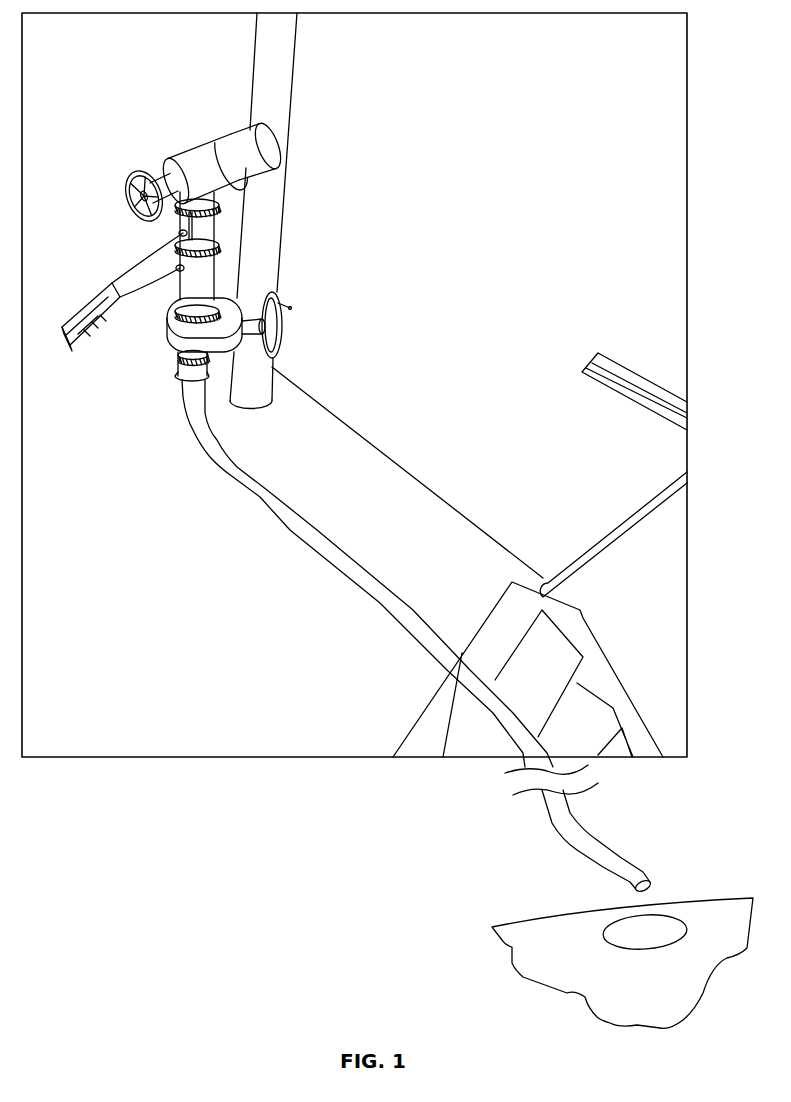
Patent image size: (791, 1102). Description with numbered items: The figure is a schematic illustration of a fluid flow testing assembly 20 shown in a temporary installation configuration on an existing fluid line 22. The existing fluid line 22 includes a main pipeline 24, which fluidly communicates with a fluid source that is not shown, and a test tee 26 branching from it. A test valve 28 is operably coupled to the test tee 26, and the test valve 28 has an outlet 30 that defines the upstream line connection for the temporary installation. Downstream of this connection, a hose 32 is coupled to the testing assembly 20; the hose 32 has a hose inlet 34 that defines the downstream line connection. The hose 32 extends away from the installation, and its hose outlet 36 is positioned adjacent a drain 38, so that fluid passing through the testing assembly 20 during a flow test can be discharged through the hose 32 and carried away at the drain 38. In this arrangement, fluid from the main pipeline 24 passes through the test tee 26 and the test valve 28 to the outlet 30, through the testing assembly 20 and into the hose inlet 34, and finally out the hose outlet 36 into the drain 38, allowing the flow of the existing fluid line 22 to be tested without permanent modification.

The fluid flow testing assembly 20 is at (100, 438).
The existing fluid line 22 is at (248, 51).
The main pipeline 24 is at (286, 100).
The test tee 26 is at (242, 135).
The test valve 28 is at (194, 162).
The outlet 30 is at (178, 215).
The hose 32 is at (250, 495).
The hose inlet 34 is at (183, 368).
The hose outlet 36 is at (652, 885).
The drain 38 is at (627, 932).